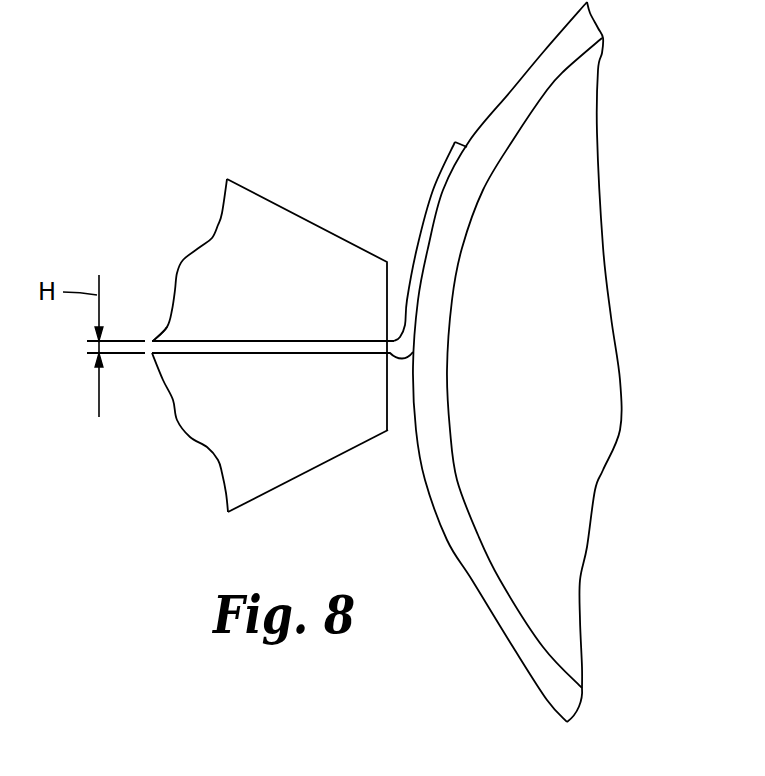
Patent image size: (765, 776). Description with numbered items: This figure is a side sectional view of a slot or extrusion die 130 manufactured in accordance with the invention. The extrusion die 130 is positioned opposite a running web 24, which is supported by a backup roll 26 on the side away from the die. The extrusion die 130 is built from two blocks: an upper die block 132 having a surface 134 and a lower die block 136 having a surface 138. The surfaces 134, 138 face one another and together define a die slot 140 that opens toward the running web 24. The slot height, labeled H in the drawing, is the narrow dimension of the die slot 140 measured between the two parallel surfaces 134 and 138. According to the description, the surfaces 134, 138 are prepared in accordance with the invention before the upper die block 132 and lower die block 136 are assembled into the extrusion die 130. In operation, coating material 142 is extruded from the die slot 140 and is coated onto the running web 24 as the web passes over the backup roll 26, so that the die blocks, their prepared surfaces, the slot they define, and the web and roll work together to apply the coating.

The running web 24 is at (442, 500).
The backup roll 26 is at (499, 393).
The extrusion die 130 is at (218, 225).
The upper die block 132 is at (338, 288).
The surface 134 is at (213, 341).
The lower die block 136 is at (339, 414).
The surface 138 is at (214, 355).
The die slot 140 is at (175, 341).
The coating material 142 is at (435, 195).